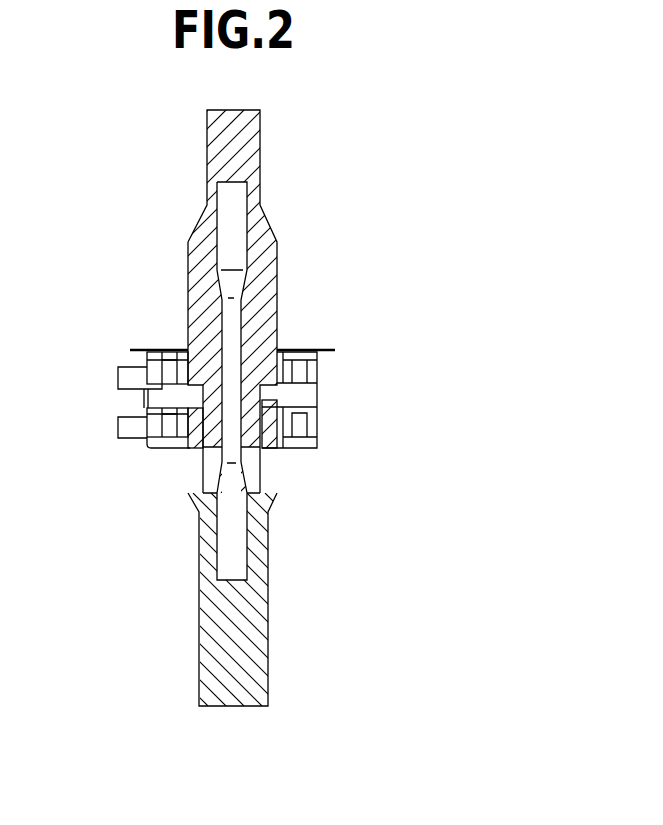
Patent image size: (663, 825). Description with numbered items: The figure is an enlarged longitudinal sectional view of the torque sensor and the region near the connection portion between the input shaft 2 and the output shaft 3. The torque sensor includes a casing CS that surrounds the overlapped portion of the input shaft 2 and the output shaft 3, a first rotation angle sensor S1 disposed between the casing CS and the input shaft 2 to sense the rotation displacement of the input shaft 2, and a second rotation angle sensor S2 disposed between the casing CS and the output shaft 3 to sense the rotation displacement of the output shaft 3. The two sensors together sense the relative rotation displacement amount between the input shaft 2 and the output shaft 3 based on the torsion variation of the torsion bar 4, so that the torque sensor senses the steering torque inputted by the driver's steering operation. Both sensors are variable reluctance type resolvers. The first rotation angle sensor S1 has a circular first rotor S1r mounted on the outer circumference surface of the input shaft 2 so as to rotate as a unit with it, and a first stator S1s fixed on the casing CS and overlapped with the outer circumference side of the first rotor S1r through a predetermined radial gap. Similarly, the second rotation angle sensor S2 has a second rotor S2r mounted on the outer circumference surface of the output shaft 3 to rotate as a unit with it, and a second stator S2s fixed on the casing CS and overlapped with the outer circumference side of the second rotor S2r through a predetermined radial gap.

The input shaft 2 is at (268, 140).
The output shaft 3 is at (276, 602).
The torsion bar 4 is at (255, 401).
The first rotation angle sensor S1 is at (135, 314).
The first stator S1s is at (163, 355).
The first rotor S1r is at (178, 362).
The second rotation angle sensor S2 is at (140, 495).
The second stator S2s is at (163, 426).
The second rotor S2r is at (182, 428).
The casing CS is at (318, 398).